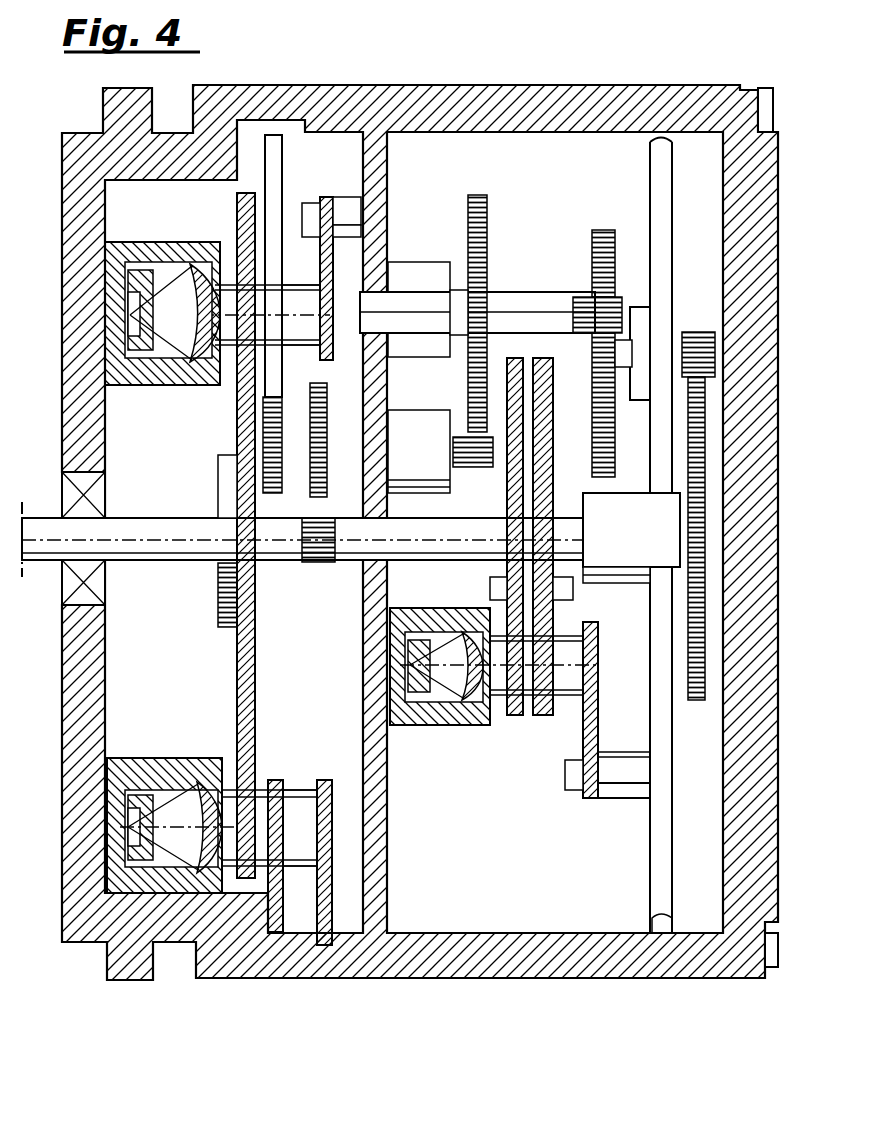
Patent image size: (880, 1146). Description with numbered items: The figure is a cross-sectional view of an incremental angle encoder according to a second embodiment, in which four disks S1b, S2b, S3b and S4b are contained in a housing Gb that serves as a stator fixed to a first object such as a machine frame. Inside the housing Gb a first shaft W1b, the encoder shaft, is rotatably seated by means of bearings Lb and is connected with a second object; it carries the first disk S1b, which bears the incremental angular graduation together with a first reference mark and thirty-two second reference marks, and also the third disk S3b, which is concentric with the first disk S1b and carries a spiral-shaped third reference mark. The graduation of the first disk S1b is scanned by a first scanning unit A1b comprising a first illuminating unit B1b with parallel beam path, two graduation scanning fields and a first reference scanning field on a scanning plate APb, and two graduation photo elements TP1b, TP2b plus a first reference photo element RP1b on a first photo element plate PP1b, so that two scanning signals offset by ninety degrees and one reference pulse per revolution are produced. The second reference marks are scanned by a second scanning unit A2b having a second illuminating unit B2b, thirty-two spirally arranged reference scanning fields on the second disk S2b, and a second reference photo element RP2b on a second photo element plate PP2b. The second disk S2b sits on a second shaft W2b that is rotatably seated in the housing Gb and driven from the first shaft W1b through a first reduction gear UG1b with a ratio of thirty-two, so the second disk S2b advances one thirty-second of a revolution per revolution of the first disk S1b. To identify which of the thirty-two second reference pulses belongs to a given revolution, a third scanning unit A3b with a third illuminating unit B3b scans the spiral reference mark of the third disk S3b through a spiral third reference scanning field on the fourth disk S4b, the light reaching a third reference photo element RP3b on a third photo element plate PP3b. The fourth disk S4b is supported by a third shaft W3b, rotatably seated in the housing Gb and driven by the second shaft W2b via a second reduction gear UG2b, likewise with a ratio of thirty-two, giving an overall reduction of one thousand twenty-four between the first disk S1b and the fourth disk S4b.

The housing Gb is at (705, 958).
The bearings Lb is at (105, 497).
The first shaft W1b is at (45, 540).
The second shaft W2b is at (460, 333).
The third shaft W3b is at (580, 569).
The first disk S1b is at (237, 220).
The second disk S2b is at (270, 183).
The third disk S3b is at (512, 716).
The fourth disk S4b is at (548, 716).
The first photo element plate PP1b is at (325, 940).
The second photo element plate PP2b is at (335, 293).
The third photo element plate PP3b is at (595, 800).
The first reference photo element RP1b is at (320, 806).
The second reference photo element RP2b is at (335, 331).
The third reference photo element RP3b is at (578, 686).
The first reduction gear UG1b is at (485, 240).
The second reduction gear UG2b is at (592, 250).
The first illuminating unit B1b is at (165, 790).
The second illuminating unit B2b is at (168, 356).
The third illuminating unit B3b is at (447, 708).
The first scanning unit A1b is at (126, 748).
The second scanning unit A2b is at (126, 398).
The third scanning unit A3b is at (408, 742).
The graduation photo element TP1b is at (382, 866).
The graduation photo element TP2b is at (382, 866).
The scanning plate APb is at (275, 922).